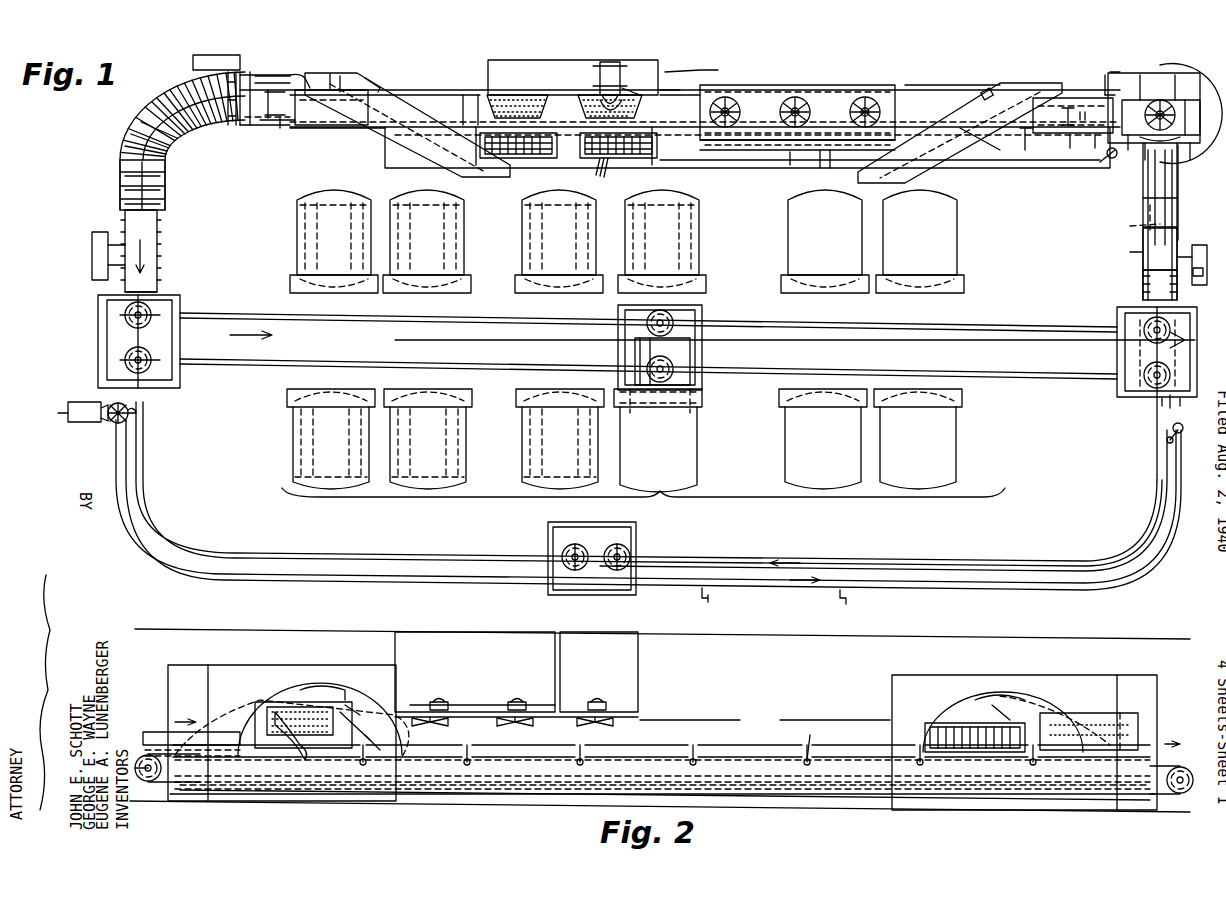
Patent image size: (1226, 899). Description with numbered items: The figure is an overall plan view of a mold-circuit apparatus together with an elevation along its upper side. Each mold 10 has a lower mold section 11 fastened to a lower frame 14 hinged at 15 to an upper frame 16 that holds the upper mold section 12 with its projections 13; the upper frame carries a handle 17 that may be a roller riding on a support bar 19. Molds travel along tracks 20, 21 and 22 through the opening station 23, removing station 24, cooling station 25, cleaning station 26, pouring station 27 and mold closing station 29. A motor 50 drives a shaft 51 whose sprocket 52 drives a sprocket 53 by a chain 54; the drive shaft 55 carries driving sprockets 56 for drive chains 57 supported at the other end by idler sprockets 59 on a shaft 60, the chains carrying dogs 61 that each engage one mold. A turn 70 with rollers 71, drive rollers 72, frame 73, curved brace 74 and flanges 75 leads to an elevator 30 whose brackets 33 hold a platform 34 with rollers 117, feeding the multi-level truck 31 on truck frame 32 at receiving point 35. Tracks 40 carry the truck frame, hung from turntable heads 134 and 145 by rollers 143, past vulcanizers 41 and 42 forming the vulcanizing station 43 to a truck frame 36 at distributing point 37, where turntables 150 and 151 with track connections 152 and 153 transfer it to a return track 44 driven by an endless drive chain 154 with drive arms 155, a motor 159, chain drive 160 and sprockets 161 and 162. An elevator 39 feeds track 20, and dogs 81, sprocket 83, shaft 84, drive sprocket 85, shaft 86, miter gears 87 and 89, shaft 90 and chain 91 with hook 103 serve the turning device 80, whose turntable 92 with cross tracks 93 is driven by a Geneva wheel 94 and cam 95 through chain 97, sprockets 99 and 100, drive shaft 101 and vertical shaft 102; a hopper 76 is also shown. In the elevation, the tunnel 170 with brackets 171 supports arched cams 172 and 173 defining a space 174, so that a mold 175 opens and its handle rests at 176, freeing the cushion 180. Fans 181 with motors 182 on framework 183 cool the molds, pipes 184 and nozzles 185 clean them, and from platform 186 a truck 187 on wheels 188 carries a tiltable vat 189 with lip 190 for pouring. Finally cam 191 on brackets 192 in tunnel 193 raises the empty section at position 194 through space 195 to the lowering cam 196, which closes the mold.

In FIG. 1, the mold 10 is at (165, 132).
In FIG. 1, the lower mold section 11 is at (505, 94).
In FIG. 1, the upper mold section 12 is at (518, 160).
In FIG. 1, the projections 13 is at (588, 162).
In FIG. 1, the lower frame 14 is at (545, 95).
In FIG. 1, the hinge 15 is at (308, 128).
In FIG. 1, the upper frame 16 is at (535, 162).
In FIG. 1, the handle 17 is at (616, 162).
In FIG. 2, the handle 17 is at (300, 702).
In FIG. 1, the support bar 19 is at (695, 168).
In FIG. 2, the support bar 19 is at (465, 790).
In FIG. 1, the track 20 is at (1088, 220).
In FIG. 1, the track 21 is at (342, 130).
In FIG. 2, the track 21 is at (696, 760).
In FIG. 1, the track 22 is at (172, 196).
In FIG. 1, the opening station 23 is at (990, 165).
In FIG. 2, the opening station 23 is at (296, 634).
In FIG. 1, the removing station 24 is at (910, 85).
In FIG. 2, the removing station 24 is at (386, 634).
In FIG. 1, the cooling station 25 is at (722, 81).
In FIG. 2, the cooling station 25 is at (501, 636).
In FIG. 1, the cleaning station 26 is at (778, 165).
In FIG. 1, the pouring station 27 is at (638, 84).
In FIG. 2, the pouring station 27 is at (775, 644).
In FIG. 1, the mold closing station 29 is at (395, 145).
In FIG. 2, the mold closing station 29 is at (1028, 649).
In FIG. 1, the elevator 30 is at (85, 234).
In FIG. 1, the multi-level truck 31 is at (165, 312).
In FIG. 1, the truck frame 32 is at (165, 290).
In FIG. 1, the brackets 33 is at (122, 240).
In FIG. 1, the horizontal platform 34 is at (147, 218).
In FIG. 1, the receiving point 35 is at (93, 313).
In FIG. 1, the truck frame 36 is at (1117, 312).
In FIG. 1, the distributing point 37 is at (1108, 405).
In FIG. 1, the elevator 39 is at (1198, 250).
In FIG. 1, the tracks 40 is at (403, 365).
In FIG. 1, the vulcanizers 41 is at (297, 238).
In FIG. 1, the vulcanizers 42 is at (293, 442).
In FIG. 1, the vulcanizing station 43 is at (659, 508).
In FIG. 1, the return track 44 is at (1118, 552).
In FIG. 1, the motor 50 is at (193, 63).
In FIG. 1, the shaft 51 is at (243, 76).
In FIG. 1, the sprocket 52 is at (220, 78).
In FIG. 1, the sprocket 53 is at (298, 78).
In FIG. 1, the chain 54 is at (272, 77).
In FIG. 1, the drive shaft 55 is at (270, 104).
In FIG. 1, the driving sprockets 56 is at (268, 126).
In FIG. 2, the driving sprockets 56 is at (1176, 790).
In FIG. 1, the drive chains 57 is at (283, 130).
In FIG. 1, the idler sprockets 59 is at (1080, 112).
In FIG. 2, the idler sprockets 59 is at (165, 770).
In FIG. 1, the shaft 60 is at (1075, 115).
In FIG. 2, the shaft 60 is at (152, 780).
In FIG. 1, the dogs 61 is at (463, 95).
In FIG. 2, the dogs 61 is at (818, 740).
In FIG. 1, the turn 70 is at (170, 140).
In FIG. 1, the rollers 71 is at (150, 135).
In FIG. 1, the drive rollers 72 is at (123, 148).
In FIG. 1, the frame 73 is at (122, 170).
In FIG. 1, the intermediate curved brace 74 is at (124, 184).
In FIG. 1, the upstanding flanges 75 is at (140, 118).
In FIG. 1, the hopper 76 is at (1186, 117).
In FIG. 1, the turning device 80 is at (1114, 221).
In FIG. 1, the dogs 81 is at (1140, 238).
In FIG. 1, the sprocket 83 is at (1140, 218).
In FIG. 1, the shaft 84 is at (1189, 205).
In FIG. 1, the drive sprocket 85 is at (1167, 197).
In FIG. 1, the shaft 86 is at (1142, 160).
In FIG. 1, the miter gear 87 is at (1112, 158).
In FIG. 1, the miter gear 89 is at (1088, 172).
In FIG. 1, the shaft 90 is at (1154, 107).
In FIG. 1, the chain 91 is at (1062, 136).
In FIG. 1, the turntable 92 is at (1182, 98).
In FIG. 1, the cross tracks 93 is at (1182, 160).
In FIG. 1, the Geneva wheel 94 is at (1146, 143).
In FIG. 1, the cam 95 is at (1095, 147).
In FIG. 1, the chain 97 is at (1152, 100).
In FIG. 1, the sprocket 99 is at (1108, 90).
In FIG. 1, the sprocket 100 is at (1108, 72).
In FIG. 1, the drive shaft 101 is at (1165, 84).
In FIG. 1, the vertical shaft 102 is at (1202, 150).
In FIG. 1, the hook 103 is at (1074, 149).
In FIG. 1, the rollers 117 is at (158, 254).
In FIG. 1, the turntable head 134 is at (675, 328).
In FIG. 1, the rollers 143 is at (610, 558).
In FIG. 1, the turntable 145 is at (672, 368).
In FIG. 1, the turntable 150 is at (1160, 285).
In FIG. 1, the turntable 151 is at (1140, 366).
In FIG. 1, the track connection 152 is at (1178, 308).
In FIG. 1, the track connection 153 is at (1181, 405).
In FIG. 1, the endless drive chain 154 is at (1140, 560).
In FIG. 1, the drive arms 155 is at (610, 596).
In FIG. 1, the motor 159 is at (82, 402).
In FIG. 1, the chain drive 160 is at (110, 422).
In FIG. 1, the sprocket 161 is at (132, 412).
In FIG. 1, the sprocket 162 is at (1175, 433).
In FIG. 2, the tunnel 170 is at (240, 668).
In FIG. 2, the brackets 171 is at (370, 710).
In FIG. 2, the arched cam 172 is at (245, 710).
In FIG. 2, the arched cam 173 is at (382, 735).
In FIG. 1, the space 174 is at (986, 147).
In FIG. 2, the space 174 is at (350, 700).
In FIG. 2, the mold 175 is at (350, 688).
In FIG. 2, the handle position 176 is at (416, 790).
In FIG. 1, the cushion 180 is at (990, 90).
In FIG. 2, the cushion 180 is at (305, 760).
In FIG. 2, the fans 181 is at (447, 724).
In FIG. 2, the motors 182 is at (440, 702).
In FIG. 2, the framework 183 is at (488, 704).
In FIG. 1, the pipes 184 is at (832, 168).
In FIG. 1, the nozzles 185 is at (798, 165).
In FIG. 1, the platform 186 is at (574, 92).
In FIG. 1, the truck 187 is at (675, 84).
In FIG. 1, the wheels 188 is at (665, 72).
In FIG. 1, the tiltable vat 189 is at (598, 75).
In FIG. 1, the lip 190 is at (604, 180).
In FIG. 2, the cam 191 is at (1000, 712).
In FIG. 2, the brackets 192 is at (985, 718).
In FIG. 2, the tunnel 193 is at (988, 678).
In FIG. 2, the upper mold section position 194 is at (1125, 715).
In FIG. 1, the space 195 is at (378, 90).
In FIG. 2, the space 195 is at (1100, 713).
In FIG. 2, the cam 196 is at (1020, 697).